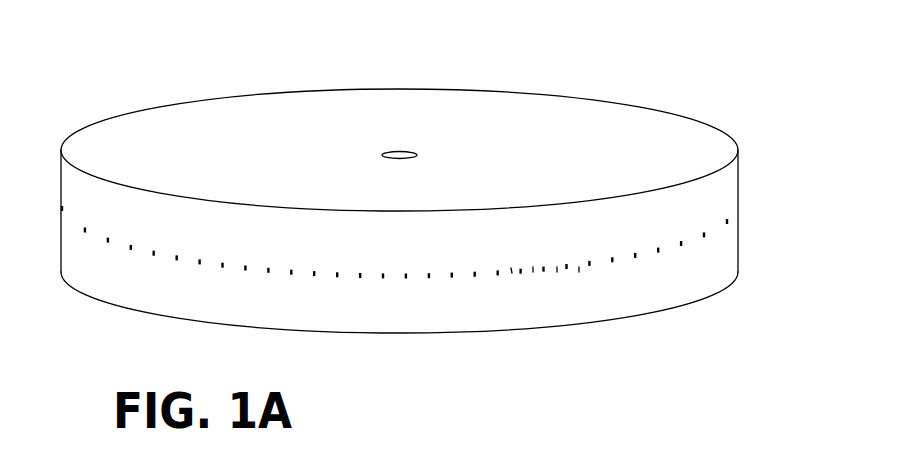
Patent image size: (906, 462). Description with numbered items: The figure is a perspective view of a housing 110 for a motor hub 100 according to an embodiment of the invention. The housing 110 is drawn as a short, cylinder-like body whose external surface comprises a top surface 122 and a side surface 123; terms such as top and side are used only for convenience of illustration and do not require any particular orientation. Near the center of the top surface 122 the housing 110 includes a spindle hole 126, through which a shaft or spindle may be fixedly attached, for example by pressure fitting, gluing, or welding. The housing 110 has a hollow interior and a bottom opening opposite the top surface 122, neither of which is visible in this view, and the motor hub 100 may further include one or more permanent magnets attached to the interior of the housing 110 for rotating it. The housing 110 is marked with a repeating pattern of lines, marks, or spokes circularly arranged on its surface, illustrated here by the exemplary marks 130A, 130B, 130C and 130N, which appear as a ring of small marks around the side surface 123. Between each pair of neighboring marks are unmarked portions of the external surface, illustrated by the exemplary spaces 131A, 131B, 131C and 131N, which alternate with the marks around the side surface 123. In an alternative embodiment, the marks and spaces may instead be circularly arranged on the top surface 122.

The motor hub 100 is at (230, 65).
The housing 110 is at (159, 107).
The top surface 122 is at (717, 145).
The side surface 123 is at (730, 183).
The spindle hole 126 is at (418, 153).
The mark 130N is at (498, 277).
The mark 130A is at (521, 276).
The mark 130B is at (544, 275).
The mark 130C is at (567, 272).
The space 131N is at (512, 273).
The space 131A is at (533, 272).
The space 131B is at (557, 272).
The space 131C is at (579, 272).